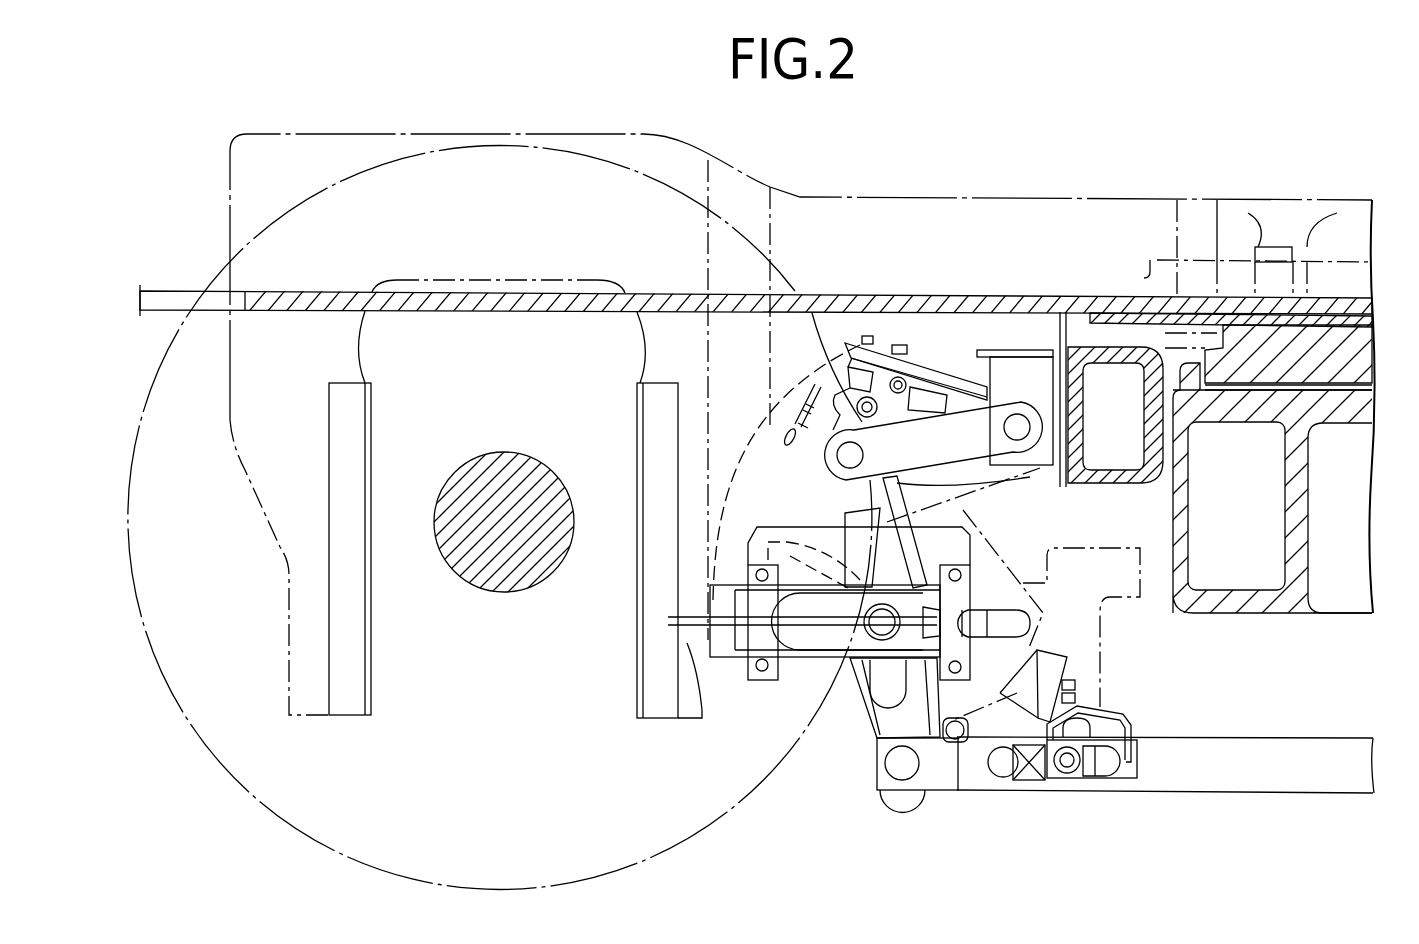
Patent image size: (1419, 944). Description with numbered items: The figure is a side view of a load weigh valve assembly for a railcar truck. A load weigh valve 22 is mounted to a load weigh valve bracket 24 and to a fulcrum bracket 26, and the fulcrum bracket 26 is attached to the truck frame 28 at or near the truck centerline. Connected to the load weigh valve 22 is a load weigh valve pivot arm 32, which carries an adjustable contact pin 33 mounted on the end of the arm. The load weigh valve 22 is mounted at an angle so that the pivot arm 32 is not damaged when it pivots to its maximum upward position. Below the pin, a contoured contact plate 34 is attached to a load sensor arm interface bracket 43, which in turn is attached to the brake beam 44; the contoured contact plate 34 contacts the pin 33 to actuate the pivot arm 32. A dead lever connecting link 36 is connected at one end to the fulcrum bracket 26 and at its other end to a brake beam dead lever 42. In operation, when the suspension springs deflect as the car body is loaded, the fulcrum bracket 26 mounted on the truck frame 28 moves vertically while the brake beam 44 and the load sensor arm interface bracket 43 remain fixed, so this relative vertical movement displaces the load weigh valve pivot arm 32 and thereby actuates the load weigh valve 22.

The load weigh valve 22 is at (833, 383).
The load weigh valve bracket 24 is at (895, 345).
The fulcrum bracket 26 is at (1025, 375).
The truck frame 28 is at (1107, 488).
The load weigh valve pivot arm 32 is at (830, 427).
The adjustable contact pin 33 is at (787, 440).
The contoured contact plate 34 is at (800, 540).
The dead lever connecting link 36 is at (882, 410).
The brake beam dead lever 42 is at (890, 490).
The load sensor arm interface bracket 43 is at (735, 551).
The brake beam 44 is at (806, 668).